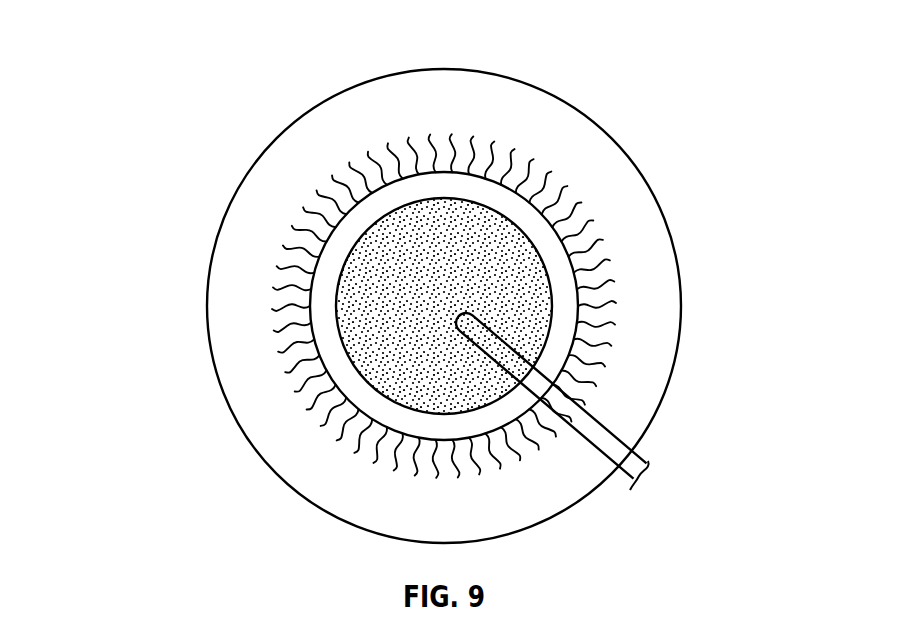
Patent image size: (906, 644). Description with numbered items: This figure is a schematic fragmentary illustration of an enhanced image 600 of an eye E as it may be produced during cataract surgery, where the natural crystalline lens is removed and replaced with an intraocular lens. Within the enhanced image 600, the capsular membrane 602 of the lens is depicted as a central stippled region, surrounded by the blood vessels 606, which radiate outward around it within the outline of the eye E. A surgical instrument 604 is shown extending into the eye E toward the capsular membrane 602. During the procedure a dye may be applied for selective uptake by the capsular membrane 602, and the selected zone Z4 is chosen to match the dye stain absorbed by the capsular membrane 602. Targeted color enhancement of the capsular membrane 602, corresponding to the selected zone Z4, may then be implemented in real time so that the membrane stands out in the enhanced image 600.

The enhanced image 600 is at (116, 90).
The eye E is at (597, 110).
The capsular membrane 602 is at (533, 245).
The selected zone Z4 is at (553, 302).
The surgical instrument 604 is at (620, 442).
The blood vessels 606 is at (255, 291).